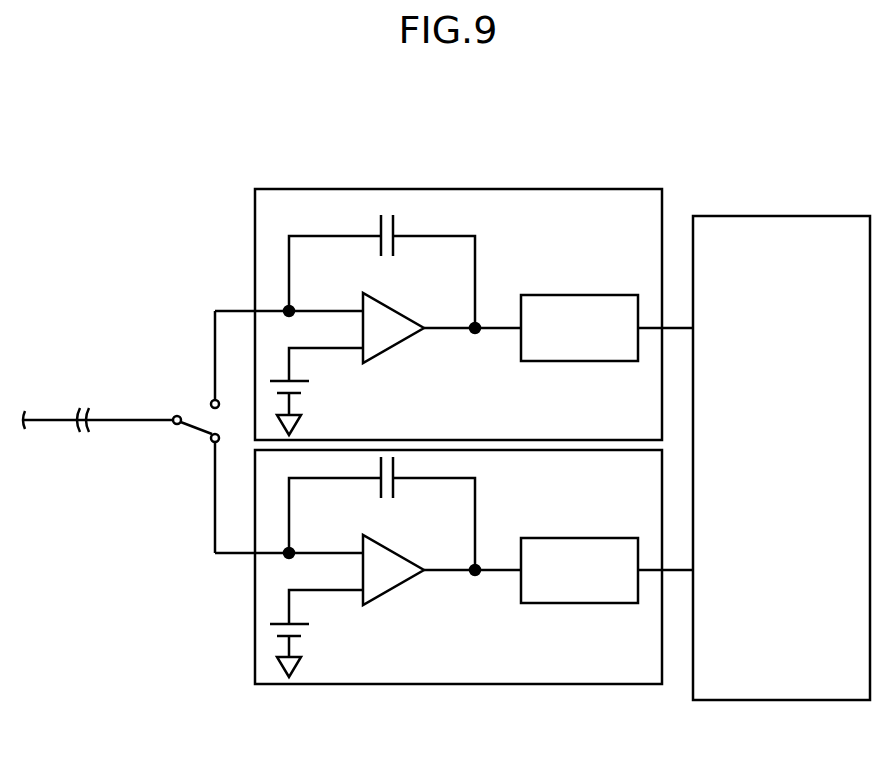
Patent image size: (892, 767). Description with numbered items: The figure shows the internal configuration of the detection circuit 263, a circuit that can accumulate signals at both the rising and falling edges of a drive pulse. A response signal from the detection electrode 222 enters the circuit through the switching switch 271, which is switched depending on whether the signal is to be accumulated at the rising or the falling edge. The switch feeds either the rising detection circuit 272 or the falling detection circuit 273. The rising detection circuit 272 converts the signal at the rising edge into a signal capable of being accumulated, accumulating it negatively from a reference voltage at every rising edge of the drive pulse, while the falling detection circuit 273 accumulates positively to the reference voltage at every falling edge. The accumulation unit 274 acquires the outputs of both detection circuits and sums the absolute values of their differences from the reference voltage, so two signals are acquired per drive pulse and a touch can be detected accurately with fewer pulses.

The detection electrode 222 is at (52, 418).
The detection circuit 263 is at (184, 183).
The switching switch 271 is at (182, 398).
The rising detection circuit 272 is at (335, 188).
The falling detection circuit 273 is at (347, 685).
The accumulation unit 274 is at (766, 214).